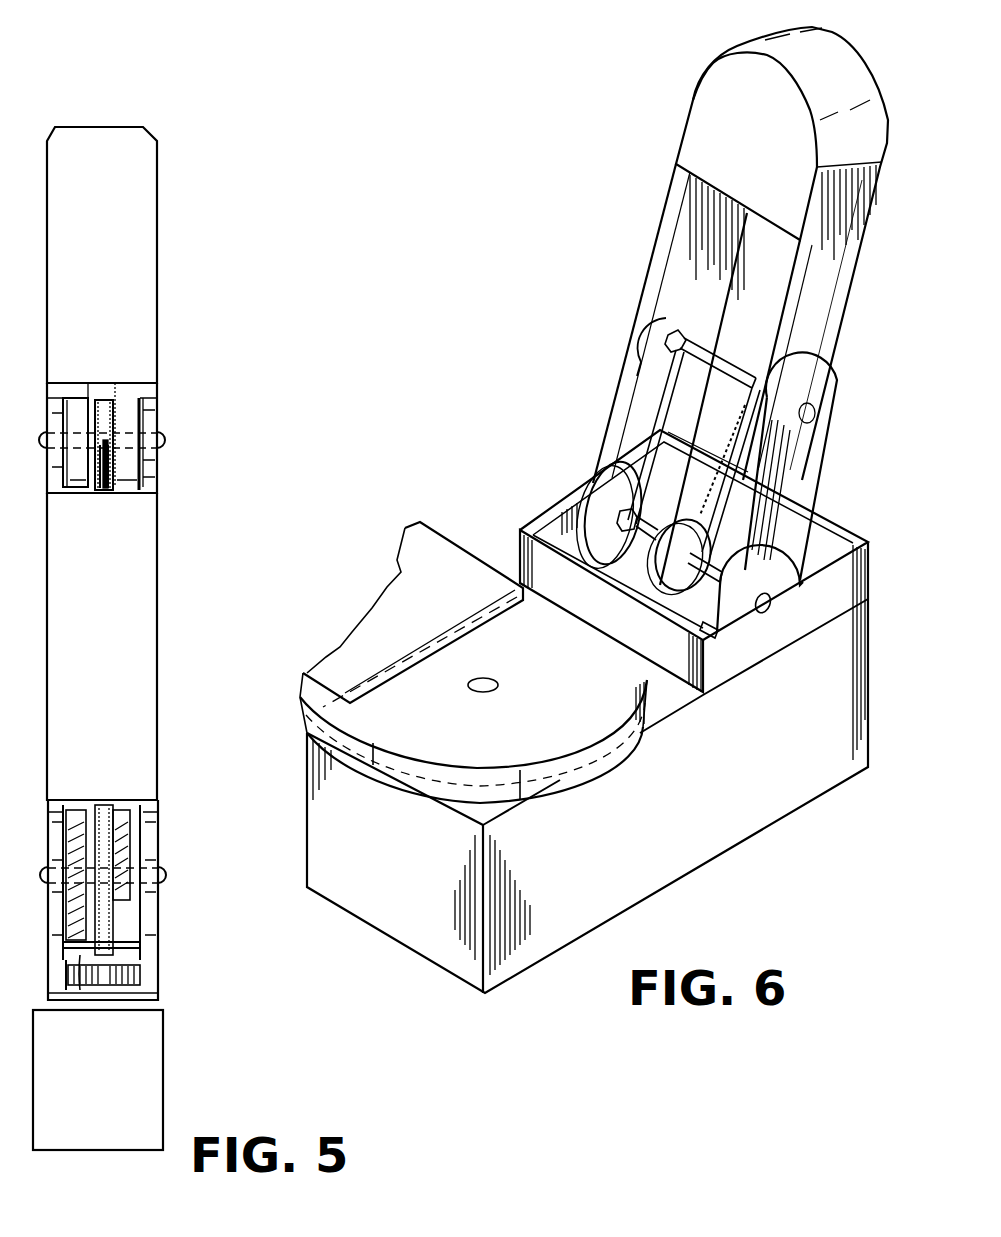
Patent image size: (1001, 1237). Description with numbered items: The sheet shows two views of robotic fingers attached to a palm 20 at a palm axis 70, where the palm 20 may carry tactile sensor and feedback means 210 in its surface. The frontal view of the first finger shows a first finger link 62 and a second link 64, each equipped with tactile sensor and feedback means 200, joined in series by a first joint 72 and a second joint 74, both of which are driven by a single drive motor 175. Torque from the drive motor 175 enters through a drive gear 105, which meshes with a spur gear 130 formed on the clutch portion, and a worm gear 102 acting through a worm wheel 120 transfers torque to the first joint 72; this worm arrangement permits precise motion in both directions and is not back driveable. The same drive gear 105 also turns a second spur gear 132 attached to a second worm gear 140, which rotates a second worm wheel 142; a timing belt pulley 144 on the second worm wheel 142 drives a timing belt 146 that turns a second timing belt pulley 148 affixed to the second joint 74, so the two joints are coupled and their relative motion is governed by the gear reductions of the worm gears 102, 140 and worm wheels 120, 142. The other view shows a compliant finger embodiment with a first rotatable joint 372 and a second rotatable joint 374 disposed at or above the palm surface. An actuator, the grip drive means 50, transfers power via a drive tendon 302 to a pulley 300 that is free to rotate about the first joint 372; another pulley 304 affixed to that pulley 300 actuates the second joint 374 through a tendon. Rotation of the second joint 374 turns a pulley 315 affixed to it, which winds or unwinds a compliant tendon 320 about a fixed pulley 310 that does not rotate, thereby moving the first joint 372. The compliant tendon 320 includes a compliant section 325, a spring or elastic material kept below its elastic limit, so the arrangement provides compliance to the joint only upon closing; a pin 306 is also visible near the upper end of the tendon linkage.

In FIG. 5, the second link 64 is at (157, 228).
In FIG. 5, the tactile sensor means and feedback means 200 is at (140, 330).
In FIG. 6, the tactile sensor means and feedback means 200 is at (700, 118).
In FIG. 5, the second joint 74 is at (165, 440).
In FIG. 5, the timing belt 146 is at (113, 462).
In FIG. 5, the second timing belt pulley 148 is at (110, 477).
In FIG. 5, the first finger link 62 is at (158, 598).
In FIG. 5, the worm wheel 120 is at (75, 805).
In FIG. 5, the timing belt pulley 144 is at (120, 805).
In FIG. 5, the second worm wheel 142 is at (167, 855).
In FIG. 5, the first joint 72 is at (127, 900).
In FIG. 5, the second worm gear 140 is at (130, 946).
In FIG. 5, the second spur gear 132 is at (142, 973).
In FIG. 5, the drive gear 105 is at (150, 995).
In FIG. 5, the spur gear 130 is at (70, 995).
In FIG. 5, the worm gear 102 is at (84, 995).
In FIG. 5, the drive motor 175 is at (148, 1064).
In FIG. 6, the grip drive means 50 is at (818, 776).
In FIG. 6, the palm 20 is at (600, 660).
In FIG. 6, the palm axis 70 is at (486, 680).
In FIG. 6, the tactile sensor and feedback means 210 is at (385, 608).
In FIG. 6, the pulley 315 is at (757, 380).
In FIG. 6, the second rotatable joint 374 is at (815, 425).
In FIG. 6, the first rotatable joint 372 is at (770, 612).
In FIG. 6, the pivot pin 306 is at (680, 332).
In FIG. 6, the compliant tendon 320 is at (740, 380).
In FIG. 6, the compliant section 325 is at (712, 468).
In FIG. 6, the drive tendon 302 is at (582, 478).
In FIG. 6, the pulley 300 is at (650, 470).
In FIG. 6, the pulley 304 is at (637, 556).
In FIG. 6, the fixed pulley 310 is at (714, 640).